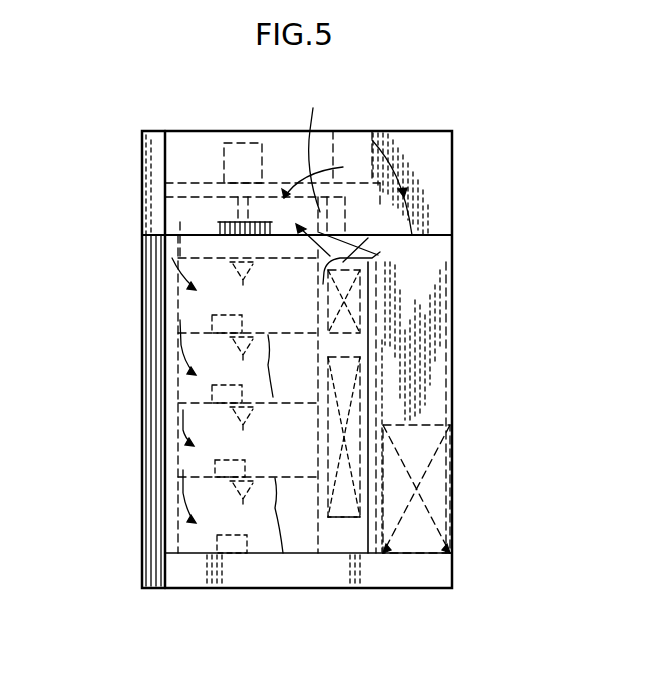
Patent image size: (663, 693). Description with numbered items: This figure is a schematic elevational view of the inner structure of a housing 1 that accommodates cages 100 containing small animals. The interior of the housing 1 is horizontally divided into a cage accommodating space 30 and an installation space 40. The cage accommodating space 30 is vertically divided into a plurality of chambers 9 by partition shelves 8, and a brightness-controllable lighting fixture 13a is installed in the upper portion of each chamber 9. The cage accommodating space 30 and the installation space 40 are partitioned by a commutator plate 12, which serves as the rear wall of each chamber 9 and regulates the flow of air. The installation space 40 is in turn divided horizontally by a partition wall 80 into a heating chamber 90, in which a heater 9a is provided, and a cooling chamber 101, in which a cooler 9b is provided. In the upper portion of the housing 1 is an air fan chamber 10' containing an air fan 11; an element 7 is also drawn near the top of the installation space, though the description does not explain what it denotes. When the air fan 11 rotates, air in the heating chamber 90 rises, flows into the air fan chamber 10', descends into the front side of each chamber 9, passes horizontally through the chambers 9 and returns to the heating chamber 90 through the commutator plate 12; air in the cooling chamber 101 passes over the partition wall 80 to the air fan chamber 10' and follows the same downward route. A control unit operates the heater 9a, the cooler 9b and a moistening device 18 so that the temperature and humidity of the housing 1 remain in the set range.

The housing 1 is at (455, 266).
The connection element 7 is at (361, 391).
The partition shelves 8 is at (282, 444).
The chambers 9 is at (310, 318).
The heater 9a is at (353, 513).
The cooler 9b is at (445, 483).
The air fan chamber 10' is at (317, 147).
The air fan 11 is at (217, 222).
The commutator plate 12 is at (322, 347).
The brightness-controllable lighting fixture 13a is at (234, 398).
The moistening device 18 is at (363, 292).
The cage accommodating space 30 is at (271, 553).
The installation space 40 is at (364, 560).
The partition wall 80 is at (377, 310).
The heating chamber 90 is at (365, 242).
The cages 100 is at (217, 542).
The cooling chamber 101 is at (445, 340).